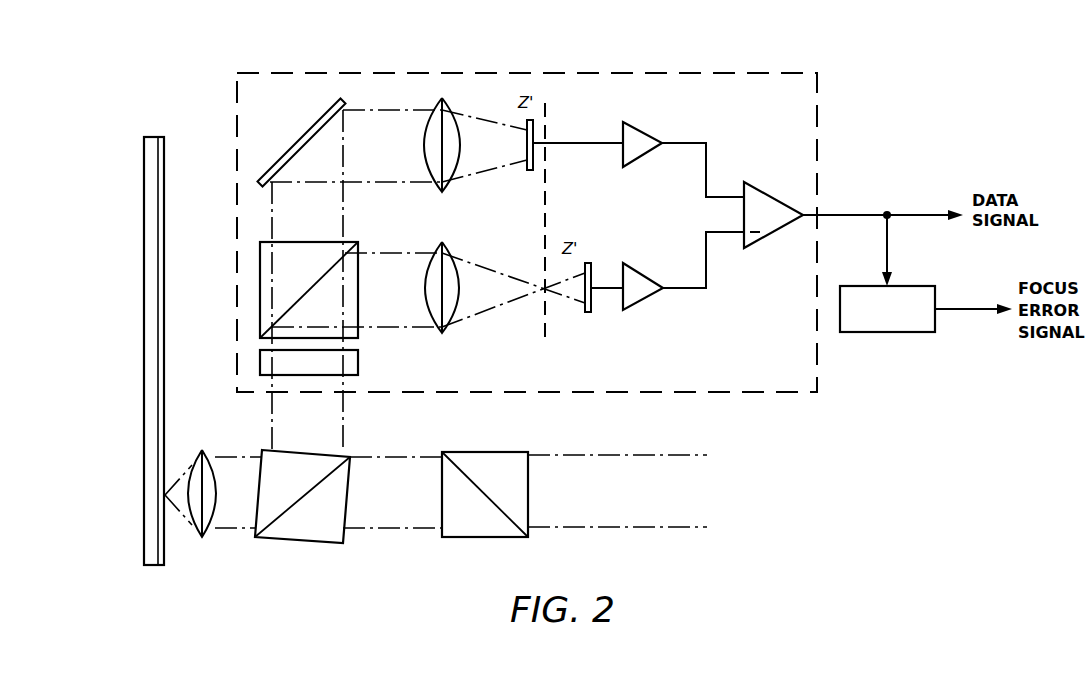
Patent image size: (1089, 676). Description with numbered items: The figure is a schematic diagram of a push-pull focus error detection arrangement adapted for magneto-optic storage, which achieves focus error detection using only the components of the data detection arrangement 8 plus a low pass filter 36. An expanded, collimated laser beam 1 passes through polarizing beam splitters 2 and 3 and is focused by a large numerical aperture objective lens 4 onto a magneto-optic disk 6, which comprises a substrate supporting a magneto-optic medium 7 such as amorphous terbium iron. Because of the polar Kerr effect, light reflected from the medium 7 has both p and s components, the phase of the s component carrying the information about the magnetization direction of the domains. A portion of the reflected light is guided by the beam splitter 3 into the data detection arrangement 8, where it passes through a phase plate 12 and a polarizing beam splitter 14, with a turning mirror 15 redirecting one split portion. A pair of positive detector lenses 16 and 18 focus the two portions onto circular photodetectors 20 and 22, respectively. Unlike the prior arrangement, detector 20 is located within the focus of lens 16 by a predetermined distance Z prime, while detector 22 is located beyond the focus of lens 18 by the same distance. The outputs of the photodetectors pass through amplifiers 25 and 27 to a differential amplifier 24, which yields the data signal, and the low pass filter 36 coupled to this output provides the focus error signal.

The laser beam 1 is at (638, 465).
The polarizing beam splitter 2 is at (486, 452).
The polarizing beam splitter 3 is at (302, 543).
The objective lens 4 is at (206, 537).
The magneto-optic disk 6 is at (137, 311).
The magneto-optic medium 7 is at (165, 172).
The data detection arrangement 8 is at (607, 73).
The phase plate 12 is at (358, 362).
The polarizing beam splitter 14 is at (328, 242).
The turning mirror 15 is at (299, 148).
The positive detector lens 16 is at (452, 185).
The positive detector lens 18 is at (454, 321).
The photodetector 20 is at (525, 126).
The photodetector 22 is at (594, 312).
The differential amplifier 24 is at (772, 190).
The amplifier 25 is at (641, 126).
The amplifier 27 is at (647, 268).
The low pass filter 36 is at (868, 332).